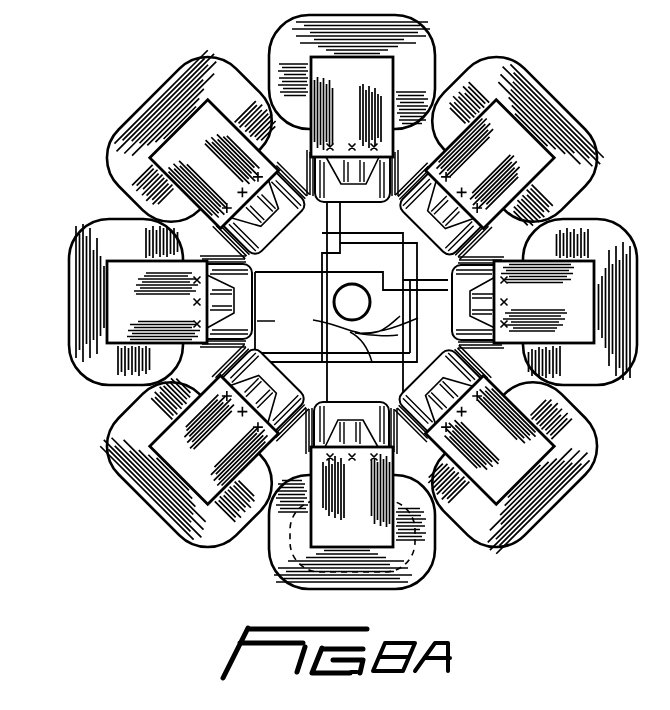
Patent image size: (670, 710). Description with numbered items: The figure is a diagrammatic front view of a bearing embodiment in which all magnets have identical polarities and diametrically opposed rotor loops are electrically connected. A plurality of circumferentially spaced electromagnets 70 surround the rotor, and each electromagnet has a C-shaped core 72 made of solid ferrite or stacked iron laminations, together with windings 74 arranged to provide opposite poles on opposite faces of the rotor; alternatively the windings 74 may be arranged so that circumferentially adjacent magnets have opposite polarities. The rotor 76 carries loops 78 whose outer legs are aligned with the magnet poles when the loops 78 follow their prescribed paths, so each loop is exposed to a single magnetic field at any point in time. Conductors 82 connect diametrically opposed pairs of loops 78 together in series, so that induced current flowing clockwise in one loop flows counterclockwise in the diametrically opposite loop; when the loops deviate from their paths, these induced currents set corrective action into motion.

The electromagnets 70 is at (357, 294).
The C-shaped core 72 is at (188, 133).
The windings 74 is at (137, 118).
The rotor 76 is at (118, 428).
The loops 78 is at (290, 436).
The conductors 82 is at (313, 327).